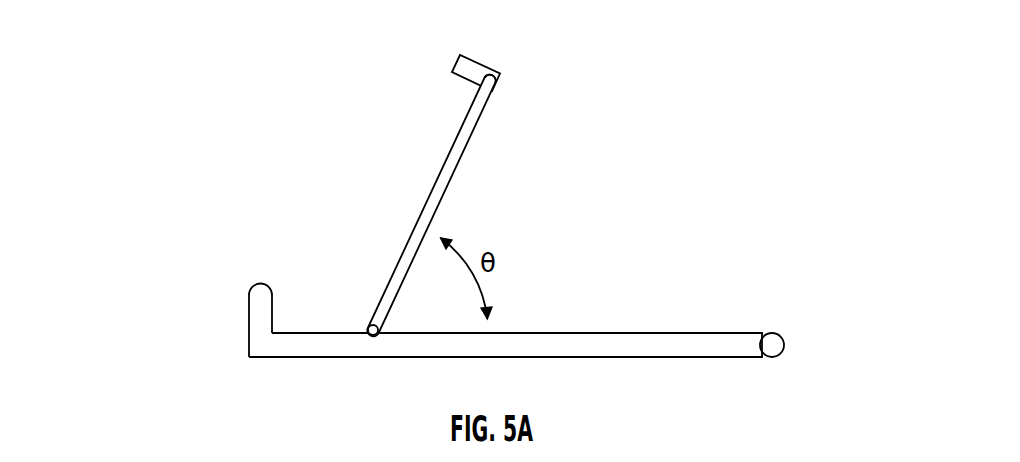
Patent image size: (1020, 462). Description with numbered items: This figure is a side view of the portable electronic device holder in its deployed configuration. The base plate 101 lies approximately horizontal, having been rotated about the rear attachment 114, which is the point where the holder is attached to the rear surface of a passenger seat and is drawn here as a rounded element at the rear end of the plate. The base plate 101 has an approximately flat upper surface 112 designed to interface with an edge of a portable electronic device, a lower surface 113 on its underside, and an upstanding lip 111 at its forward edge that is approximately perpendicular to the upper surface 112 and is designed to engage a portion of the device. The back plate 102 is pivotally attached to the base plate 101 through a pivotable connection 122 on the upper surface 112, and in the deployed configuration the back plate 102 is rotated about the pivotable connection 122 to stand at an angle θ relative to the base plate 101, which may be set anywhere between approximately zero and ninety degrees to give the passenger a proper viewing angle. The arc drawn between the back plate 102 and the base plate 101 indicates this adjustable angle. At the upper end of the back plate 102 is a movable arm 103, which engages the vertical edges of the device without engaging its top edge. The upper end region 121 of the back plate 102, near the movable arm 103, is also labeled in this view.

The base plate 101 is at (308, 347).
The upstanding lip 111 is at (262, 307).
The upper surface 112 is at (710, 333).
The lower surface 113 is at (632, 357).
The rear attachment 114 is at (784, 345).
The back plate 102 is at (457, 157).
The movable arm 103 is at (458, 63).
The upper end of arm 121 is at (503, 80).
The pivotable connection 122 is at (369, 327).